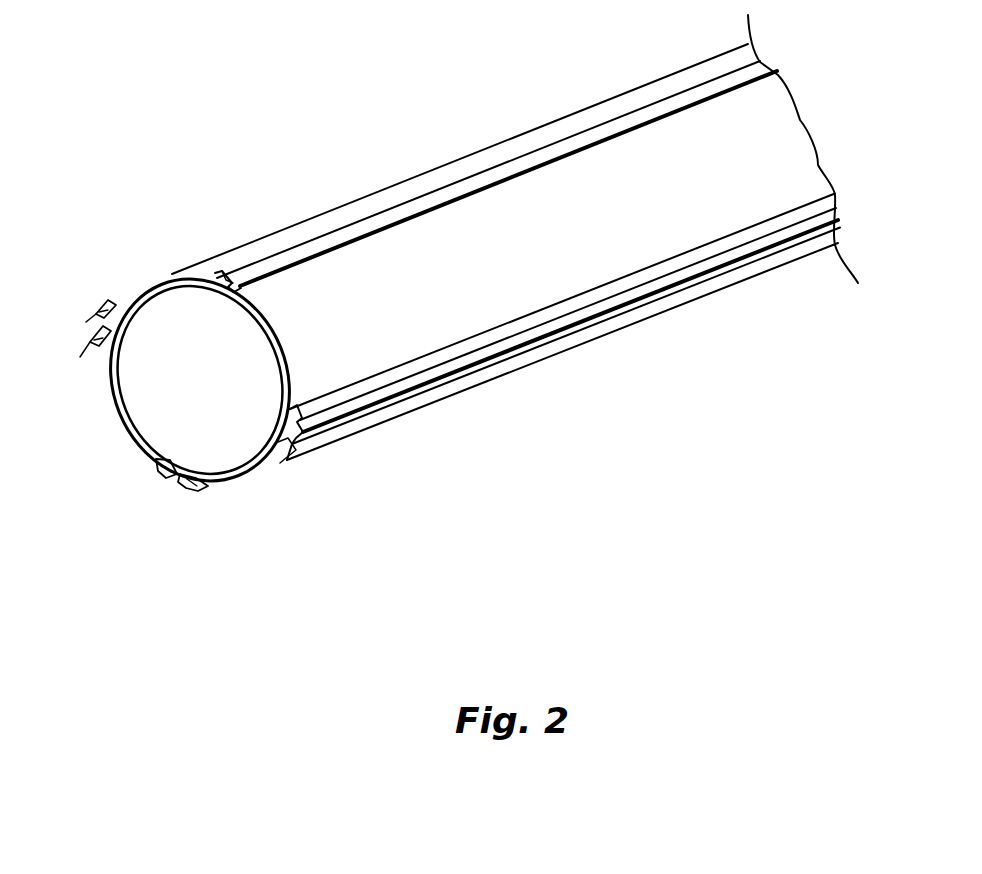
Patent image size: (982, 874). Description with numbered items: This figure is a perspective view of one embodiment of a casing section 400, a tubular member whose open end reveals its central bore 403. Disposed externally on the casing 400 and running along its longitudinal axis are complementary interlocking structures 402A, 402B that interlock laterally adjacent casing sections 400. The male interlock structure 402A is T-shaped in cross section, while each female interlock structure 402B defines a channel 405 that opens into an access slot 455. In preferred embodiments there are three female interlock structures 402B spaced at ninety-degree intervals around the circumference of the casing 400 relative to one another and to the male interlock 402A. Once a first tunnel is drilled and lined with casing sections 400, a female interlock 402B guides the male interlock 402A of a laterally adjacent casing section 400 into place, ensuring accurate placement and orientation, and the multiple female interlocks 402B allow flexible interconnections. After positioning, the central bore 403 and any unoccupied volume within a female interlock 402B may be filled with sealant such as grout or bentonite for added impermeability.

The casing section 400 is at (759, 349).
The central bore 403 is at (172, 354).
The channel 405 is at (277, 427).
The male interlock structure 402A is at (333, 243).
The female interlock structure 402B is at (90, 350).
The access slot 455 is at (360, 417).